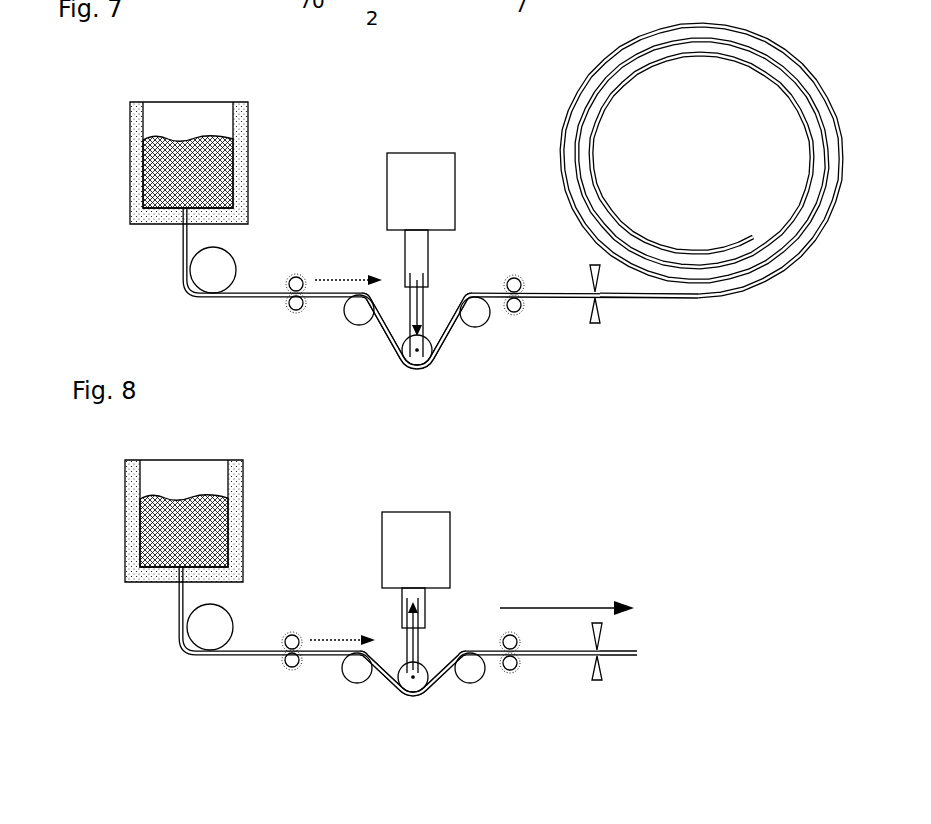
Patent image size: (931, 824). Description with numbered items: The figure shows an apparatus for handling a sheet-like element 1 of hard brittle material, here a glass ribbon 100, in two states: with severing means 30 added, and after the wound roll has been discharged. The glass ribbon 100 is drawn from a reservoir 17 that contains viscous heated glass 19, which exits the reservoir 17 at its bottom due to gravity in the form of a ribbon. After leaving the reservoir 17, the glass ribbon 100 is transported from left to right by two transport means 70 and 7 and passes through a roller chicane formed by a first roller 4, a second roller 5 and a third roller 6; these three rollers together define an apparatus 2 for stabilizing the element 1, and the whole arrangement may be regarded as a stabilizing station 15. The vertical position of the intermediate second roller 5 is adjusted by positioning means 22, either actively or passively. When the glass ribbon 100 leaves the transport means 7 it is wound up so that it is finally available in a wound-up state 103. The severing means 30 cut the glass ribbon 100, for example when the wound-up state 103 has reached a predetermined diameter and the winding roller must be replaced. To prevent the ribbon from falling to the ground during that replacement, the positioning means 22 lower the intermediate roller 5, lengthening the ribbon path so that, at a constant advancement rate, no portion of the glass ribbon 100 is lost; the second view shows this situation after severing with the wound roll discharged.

In FIG. 7, the element 1 is at (441, 298).
In FIG. 8, the element 1 is at (426, 654).
In FIG. 7, the glass ribbon 100 is at (617, 307).
In FIG. 7, the apparatus for stabilizing the element 2 is at (401, 376).
In FIG. 8, the apparatus for stabilizing the element 2 is at (401, 721).
In FIG. 7, the first roller 4 is at (353, 330).
In FIG. 8, the first roller 4 is at (350, 682).
In FIG. 7, the second roller 5 is at (432, 365).
In FIG. 8, the second roller 5 is at (423, 693).
In FIG. 7, the third roller 6 is at (483, 332).
In FIG. 8, the third roller 6 is at (480, 688).
In FIG. 7, the transport means 7 is at (517, 342).
In FIG. 8, the transport means 7 is at (515, 696).
In FIG. 7, the impregnation station 15 is at (345, 189).
In FIG. 8, the impregnation station 15 is at (345, 573).
In FIG. 7, the reservoir 17 is at (245, 173).
In FIG. 8, the reservoir 17 is at (243, 527).
In FIG. 7, the viscous heated glass 19 is at (192, 172).
In FIG. 8, the viscous heated glass 19 is at (190, 525).
In FIG. 7, the positioning means 22 is at (452, 198).
In FIG. 8, the positioning means 22 is at (452, 552).
In FIG. 7, the severing means 30 is at (592, 327).
In FIG. 8, the severing means 30 is at (590, 667).
In FIG. 7, the transport means 70 is at (300, 338).
In FIG. 8, the transport means 70 is at (298, 694).
In FIG. 7, the wound-up state 103 is at (590, 80).